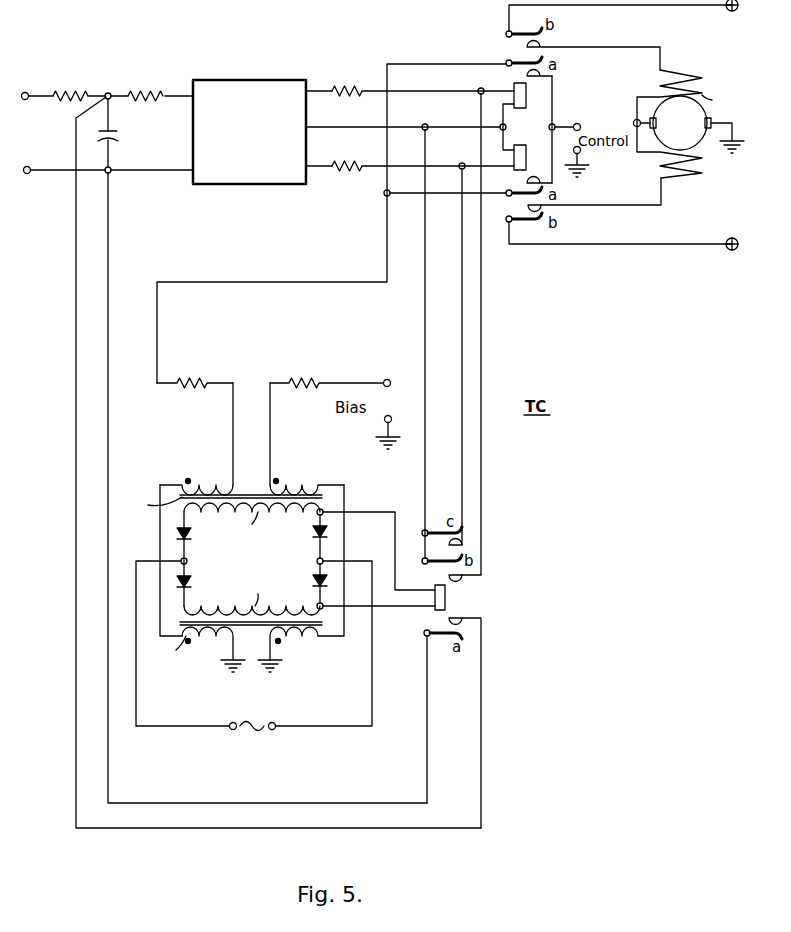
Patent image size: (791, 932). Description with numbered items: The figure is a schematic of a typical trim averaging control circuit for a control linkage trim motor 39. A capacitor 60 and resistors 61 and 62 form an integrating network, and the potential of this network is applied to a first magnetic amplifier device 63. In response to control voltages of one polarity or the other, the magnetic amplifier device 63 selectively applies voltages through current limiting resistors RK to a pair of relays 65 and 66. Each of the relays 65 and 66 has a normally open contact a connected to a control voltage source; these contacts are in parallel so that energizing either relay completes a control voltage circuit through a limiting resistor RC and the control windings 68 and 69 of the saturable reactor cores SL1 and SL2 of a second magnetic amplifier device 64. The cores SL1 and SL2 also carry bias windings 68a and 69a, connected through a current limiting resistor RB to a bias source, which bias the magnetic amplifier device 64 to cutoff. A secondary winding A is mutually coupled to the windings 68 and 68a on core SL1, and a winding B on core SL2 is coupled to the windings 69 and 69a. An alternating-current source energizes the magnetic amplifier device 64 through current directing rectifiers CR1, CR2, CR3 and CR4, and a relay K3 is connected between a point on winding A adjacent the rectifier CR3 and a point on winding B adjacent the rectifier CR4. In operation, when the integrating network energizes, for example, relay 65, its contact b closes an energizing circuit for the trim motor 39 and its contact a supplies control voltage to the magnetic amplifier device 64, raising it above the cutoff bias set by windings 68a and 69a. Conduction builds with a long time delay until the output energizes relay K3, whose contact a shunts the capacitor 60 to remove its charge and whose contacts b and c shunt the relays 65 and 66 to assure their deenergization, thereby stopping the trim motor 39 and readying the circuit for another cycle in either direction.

The trim motor 39 is at (704, 141).
The capacitor 60 is at (118, 133).
The resistor 61 is at (80, 84).
The resistor 62 is at (154, 88).
The magnetic amplifier device 63 is at (289, 80).
The magnetic amplifier device 64 is at (252, 559).
The relay 65 is at (517, 86).
The relay 66 is at (534, 139).
The control winding 68 is at (196, 478).
The bias winding 68a is at (307, 478).
The control winding 69 is at (213, 649).
The bias winding 69a is at (288, 649).
The current limiting resistor RK is at (366, 85).
The limiting resistor RC is at (206, 376).
The current limiting resistor RB is at (318, 376).
The rectifier CR1 is at (190, 540).
The rectifier CR2 is at (190, 590).
The rectifier CR3 is at (313, 539).
The rectifier CR4 is at (314, 589).
The saturable reactor core SL1 is at (150, 506).
The saturable reactor core SL2 is at (165, 651).
The relay K3 is at (446, 600).